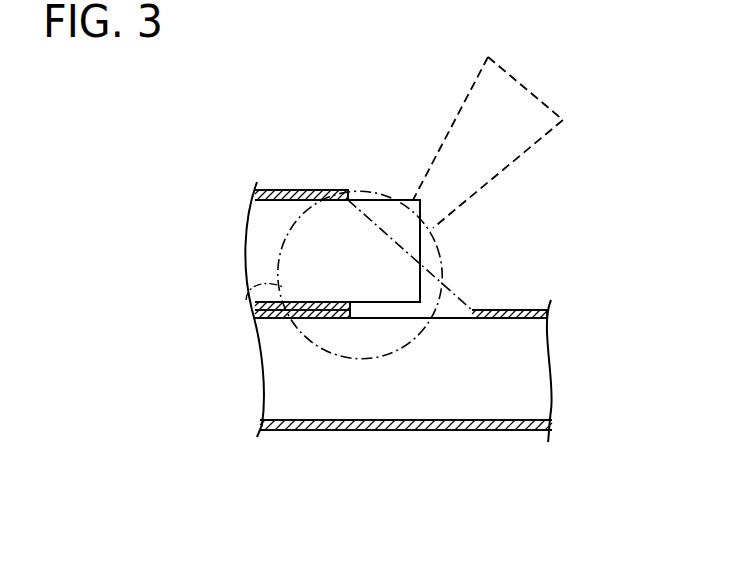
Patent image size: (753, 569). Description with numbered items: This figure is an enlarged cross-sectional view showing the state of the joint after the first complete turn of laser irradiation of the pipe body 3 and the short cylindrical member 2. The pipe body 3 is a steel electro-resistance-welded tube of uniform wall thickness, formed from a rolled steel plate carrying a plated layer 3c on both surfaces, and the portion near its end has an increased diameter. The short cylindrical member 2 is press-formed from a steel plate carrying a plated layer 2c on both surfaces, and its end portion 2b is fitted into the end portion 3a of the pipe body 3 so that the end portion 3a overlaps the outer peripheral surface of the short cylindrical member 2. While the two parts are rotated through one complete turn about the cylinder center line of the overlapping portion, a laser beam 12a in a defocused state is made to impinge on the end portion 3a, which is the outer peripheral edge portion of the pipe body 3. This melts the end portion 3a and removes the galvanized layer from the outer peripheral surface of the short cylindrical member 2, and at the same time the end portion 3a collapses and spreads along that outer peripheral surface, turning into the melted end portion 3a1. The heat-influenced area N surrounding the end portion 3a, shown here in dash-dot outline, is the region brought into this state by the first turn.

The short cylindrical member 2 is at (512, 436).
The end portion of the short cylindrical member 2b is at (310, 430).
The plated layer of the short cylindrical member 2c is at (315, 313).
The pipe body 3 is at (288, 186).
The end portion of the pipe body 3a is at (414, 194).
The melted end portion 3a1 is at (455, 293).
The plated layer of the pipe body 3c is at (258, 305).
The laser beam 12a is at (538, 141).
The heat-influenced area N is at (248, 302).